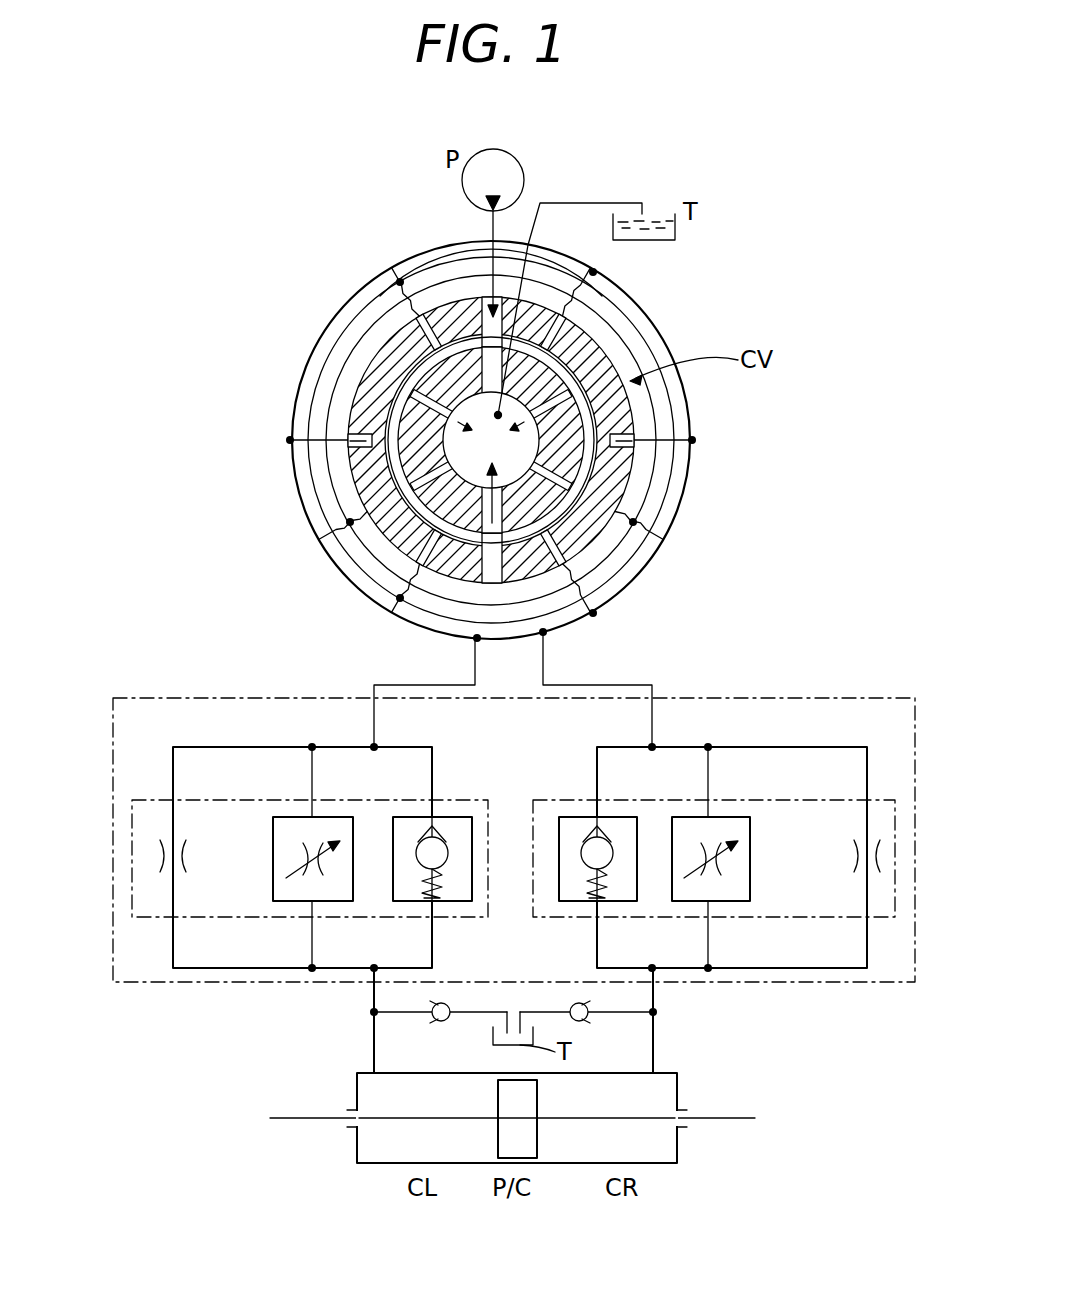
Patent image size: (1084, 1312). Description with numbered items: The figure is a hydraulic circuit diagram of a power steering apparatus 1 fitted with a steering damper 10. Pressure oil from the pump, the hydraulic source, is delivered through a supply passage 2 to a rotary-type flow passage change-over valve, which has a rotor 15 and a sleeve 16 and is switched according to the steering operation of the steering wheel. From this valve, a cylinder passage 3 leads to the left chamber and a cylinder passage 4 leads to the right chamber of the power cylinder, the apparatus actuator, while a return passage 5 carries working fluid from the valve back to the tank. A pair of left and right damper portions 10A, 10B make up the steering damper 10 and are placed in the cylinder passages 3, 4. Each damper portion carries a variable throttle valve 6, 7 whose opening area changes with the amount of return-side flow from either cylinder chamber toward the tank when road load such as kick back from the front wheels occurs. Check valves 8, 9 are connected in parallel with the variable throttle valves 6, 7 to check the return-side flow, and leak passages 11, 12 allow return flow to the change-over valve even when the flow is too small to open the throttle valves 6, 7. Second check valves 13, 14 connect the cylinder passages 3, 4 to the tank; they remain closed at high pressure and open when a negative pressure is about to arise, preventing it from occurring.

The power steering apparatus 1 is at (750, 252).
The supply passage 2 is at (488, 230).
The cylinder passage 3 is at (373, 1040).
The cylinder passage 4 is at (654, 1033).
The return passage 5 is at (596, 205).
The variable throttle valve 6 is at (273, 857).
The variable throttle valve 7 is at (750, 838).
The check valve 8 is at (472, 880).
The check valve 9 is at (559, 880).
The steering damper 10 is at (853, 698).
The left damper portion 10A is at (472, 800).
The right damper portion 10B is at (573, 800).
The leak passage 11 is at (163, 873).
The leak passage 12 is at (878, 880).
The second check valve 13 is at (437, 1019).
The second check valve 14 is at (586, 1020).
The rotor 15 is at (586, 450).
The sleeve 16 is at (595, 537).